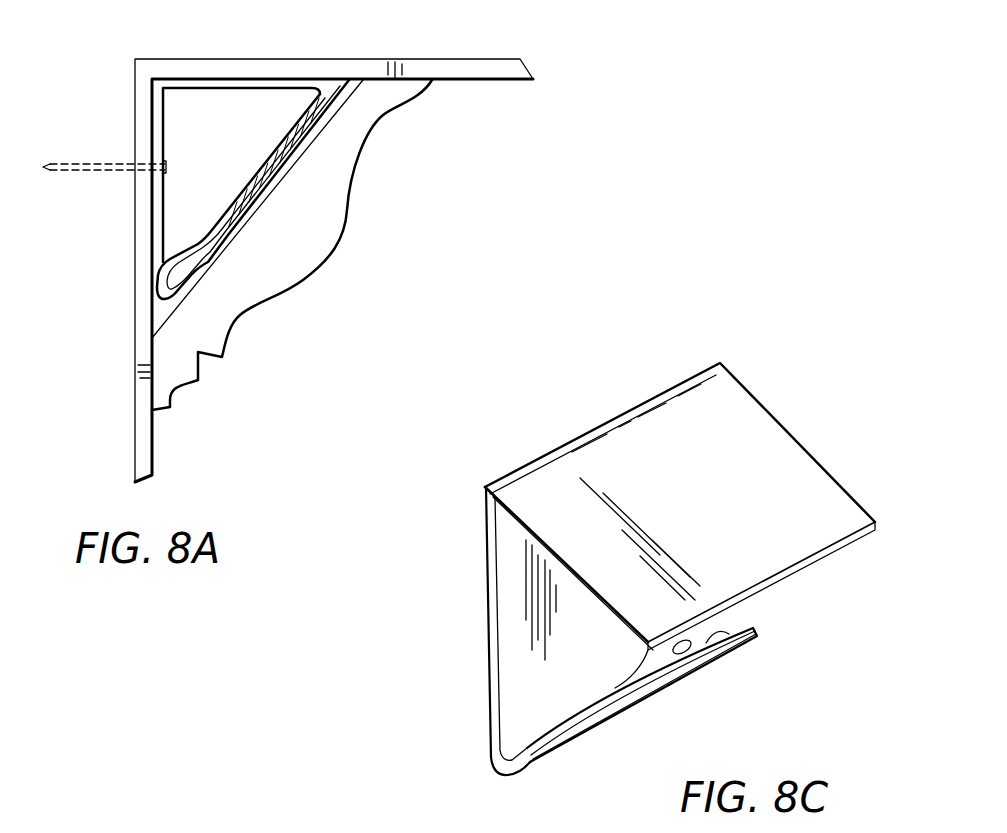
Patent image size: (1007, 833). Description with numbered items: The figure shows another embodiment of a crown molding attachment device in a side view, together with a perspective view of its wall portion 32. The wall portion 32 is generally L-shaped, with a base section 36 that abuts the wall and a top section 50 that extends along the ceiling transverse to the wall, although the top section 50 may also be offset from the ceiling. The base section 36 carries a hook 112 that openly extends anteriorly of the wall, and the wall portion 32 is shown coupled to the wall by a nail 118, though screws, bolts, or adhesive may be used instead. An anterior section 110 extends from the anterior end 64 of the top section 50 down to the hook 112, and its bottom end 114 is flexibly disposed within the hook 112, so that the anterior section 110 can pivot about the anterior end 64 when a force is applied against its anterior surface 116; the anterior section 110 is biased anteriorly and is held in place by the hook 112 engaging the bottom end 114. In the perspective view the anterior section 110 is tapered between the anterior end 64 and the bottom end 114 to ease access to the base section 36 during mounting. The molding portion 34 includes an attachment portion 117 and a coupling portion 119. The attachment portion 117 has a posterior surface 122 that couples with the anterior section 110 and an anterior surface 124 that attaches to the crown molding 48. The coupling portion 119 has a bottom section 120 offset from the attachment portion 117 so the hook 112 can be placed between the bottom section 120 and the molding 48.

In FIG. 8A, the wall portion 32 is at (150, 86).
In FIG. 8C, the wall portion 32 is at (812, 356).
In FIG. 8A, the molding portion 34 is at (312, 128).
In FIG. 8A, the base section 36 is at (150, 190).
In FIG. 8C, the base section 36 is at (489, 672).
In FIG. 8A, the crown molding 48 is at (316, 222).
In FIG. 8A, the top section 50 is at (223, 77).
In FIG. 8C, the top section 50 is at (527, 522).
In FIG. 8A, the anterior end 64 is at (318, 82).
In FIG. 8C, the anterior end 64 is at (790, 572).
In FIG. 8A, the anterior section 110 is at (283, 142).
In FIG. 8C, the anterior section 110 is at (645, 670).
In FIG. 8A, the hook 112 is at (156, 295).
In FIG. 8C, the hook 112 is at (532, 752).
In FIG. 8A, the bottom end 114 is at (178, 243).
In FIG. 8C, the bottom end 114 is at (503, 748).
In FIG. 8A, the anterior surface 116 is at (247, 190).
In FIG. 8A, the attachment portion 117 is at (247, 222).
In FIG. 8A, the nail 118 is at (92, 166).
In FIG. 8A, the coupling portion 119 is at (160, 282).
In FIG. 8A, the bottom section 120 is at (203, 276).
In FIG. 8A, the posterior surface 122 is at (315, 124).
In FIG. 8A, the anterior surface 124 is at (282, 166).